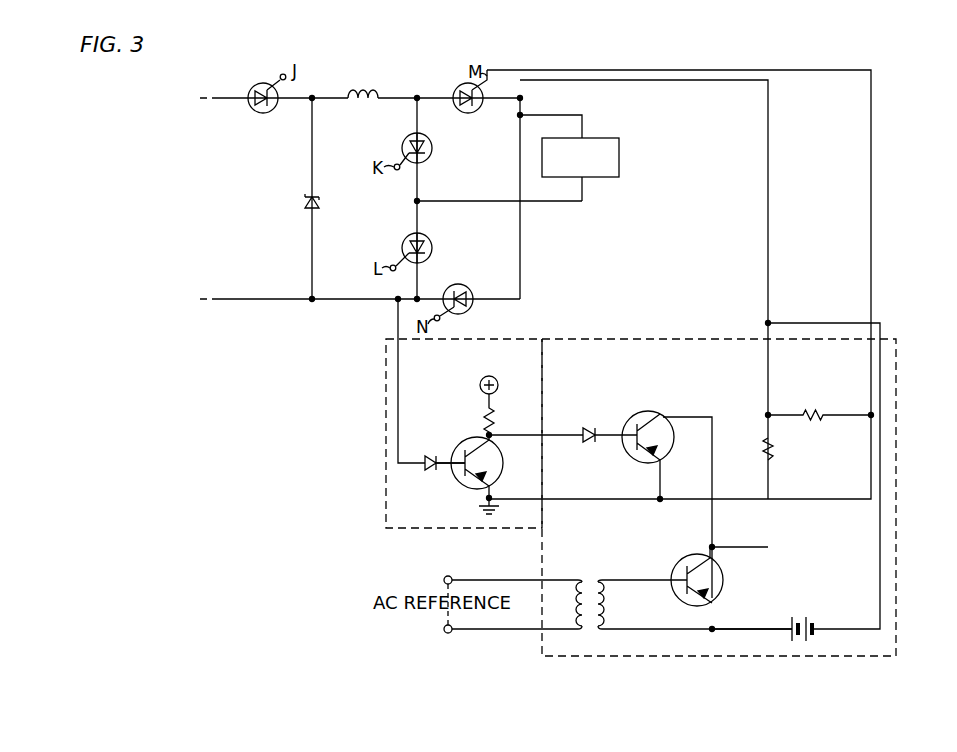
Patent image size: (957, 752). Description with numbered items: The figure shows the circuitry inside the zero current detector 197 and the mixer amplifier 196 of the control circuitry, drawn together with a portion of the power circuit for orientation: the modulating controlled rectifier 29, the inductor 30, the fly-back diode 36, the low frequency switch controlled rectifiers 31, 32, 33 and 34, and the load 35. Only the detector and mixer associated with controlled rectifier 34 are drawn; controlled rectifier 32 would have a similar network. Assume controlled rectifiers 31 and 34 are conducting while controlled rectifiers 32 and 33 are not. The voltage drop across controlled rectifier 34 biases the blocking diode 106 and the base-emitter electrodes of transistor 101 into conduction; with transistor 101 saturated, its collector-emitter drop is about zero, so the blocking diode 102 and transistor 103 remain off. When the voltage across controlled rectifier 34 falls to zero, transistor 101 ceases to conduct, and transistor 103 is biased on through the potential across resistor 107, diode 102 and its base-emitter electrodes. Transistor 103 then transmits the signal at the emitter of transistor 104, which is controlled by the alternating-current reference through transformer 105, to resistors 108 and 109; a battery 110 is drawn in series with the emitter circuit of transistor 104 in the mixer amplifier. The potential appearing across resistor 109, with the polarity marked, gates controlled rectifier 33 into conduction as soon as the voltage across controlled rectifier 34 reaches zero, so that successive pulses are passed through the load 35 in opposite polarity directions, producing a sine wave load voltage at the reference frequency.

The modulating controlled rectifier 29 is at (252, 86).
The inductor 30 is at (360, 88).
The low frequency switch controlled rectifier 31 is at (432, 154).
The low frequency switch controlled rectifier 32 is at (432, 246).
The low frequency switch controlled rectifier 33 is at (456, 86).
The low frequency switch controlled rectifier 34 is at (468, 310).
The load 35 is at (620, 158).
The fly-back diode 36 is at (320, 202).
The transistor 101 is at (468, 440).
The blocking diode 102 is at (588, 428).
The transistor 103 is at (643, 414).
The transistor 104 is at (723, 580).
The transformer 105 is at (592, 574).
The blocking diode 106 is at (431, 472).
The resistor 107 is at (501, 415).
The resistor 108 is at (776, 452).
The resistor 109 is at (810, 409).
The battery 110 is at (810, 623).
The mixer amplifier 196 is at (896, 484).
The zero current detector 197 is at (386, 413).